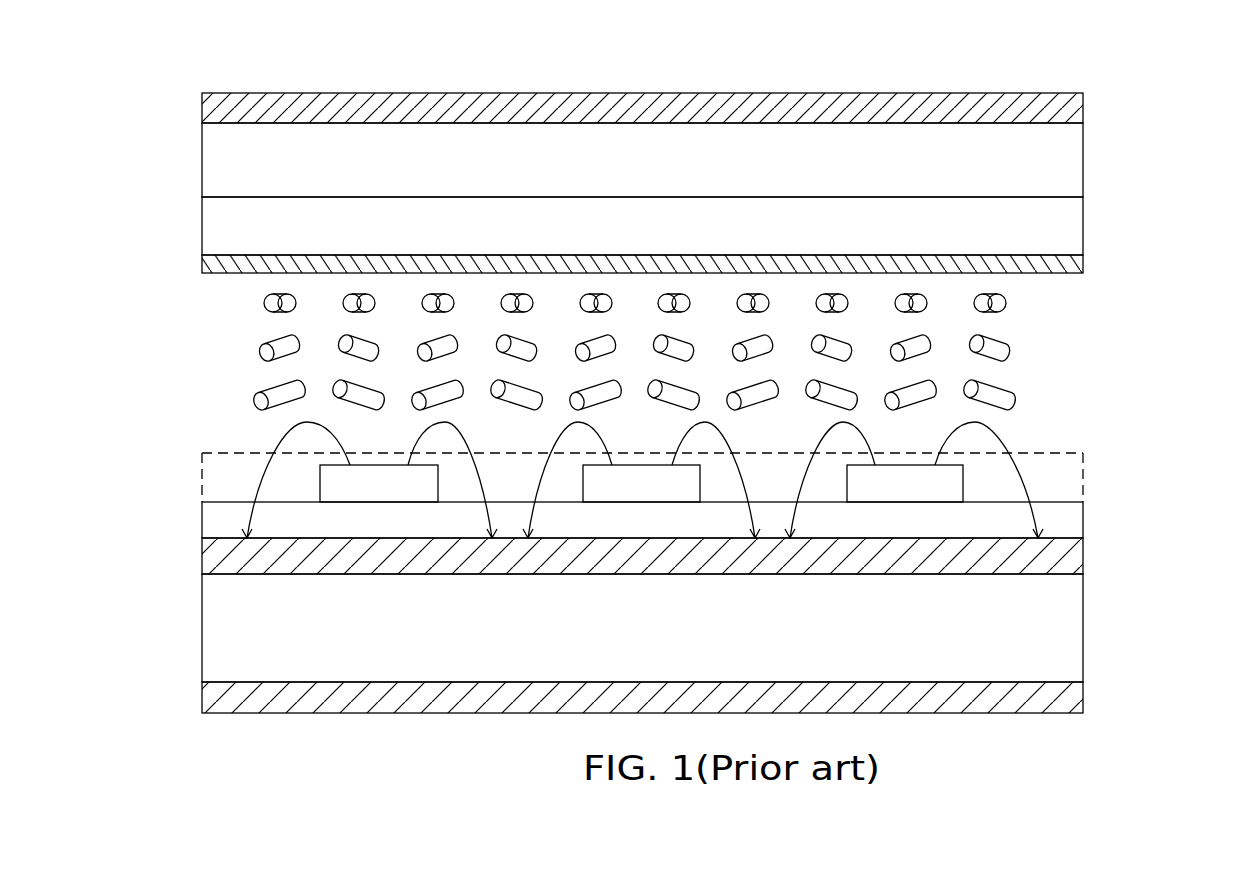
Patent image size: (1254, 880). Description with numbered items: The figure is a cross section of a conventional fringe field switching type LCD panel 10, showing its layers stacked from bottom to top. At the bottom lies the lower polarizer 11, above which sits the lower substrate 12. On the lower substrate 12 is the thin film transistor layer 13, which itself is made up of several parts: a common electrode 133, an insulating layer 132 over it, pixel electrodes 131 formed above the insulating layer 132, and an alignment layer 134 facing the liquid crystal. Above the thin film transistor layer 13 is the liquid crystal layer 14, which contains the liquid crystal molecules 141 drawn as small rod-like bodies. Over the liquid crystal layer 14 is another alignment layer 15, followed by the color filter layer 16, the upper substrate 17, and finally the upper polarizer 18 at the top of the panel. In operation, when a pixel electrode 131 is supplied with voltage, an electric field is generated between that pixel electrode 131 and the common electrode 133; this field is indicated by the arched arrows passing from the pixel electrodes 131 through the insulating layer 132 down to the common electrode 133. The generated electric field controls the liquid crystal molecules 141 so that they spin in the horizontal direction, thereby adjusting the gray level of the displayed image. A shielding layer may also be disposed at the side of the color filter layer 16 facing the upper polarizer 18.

The FFS type LCD panel 10 is at (1153, 52).
The lower polarizer 11 is at (1083, 698).
The lower substrate 12 is at (1083, 630).
The thin film transistor layer 13 is at (659, 498).
The pixel electrodes 131 is at (357, 494).
The insulating layer 132 is at (1083, 520).
The common electrode 133 is at (1083, 558).
The alignment layer 134 is at (1083, 478).
The liquid crystal layer 14 is at (704, 353).
The liquid crystal molecules 141 is at (993, 350).
The alignment layer 15 is at (1083, 263).
The color filter layer 16 is at (1083, 225).
The upper substrate 17 is at (1083, 160).
The upper polarizer 18 is at (1083, 110).